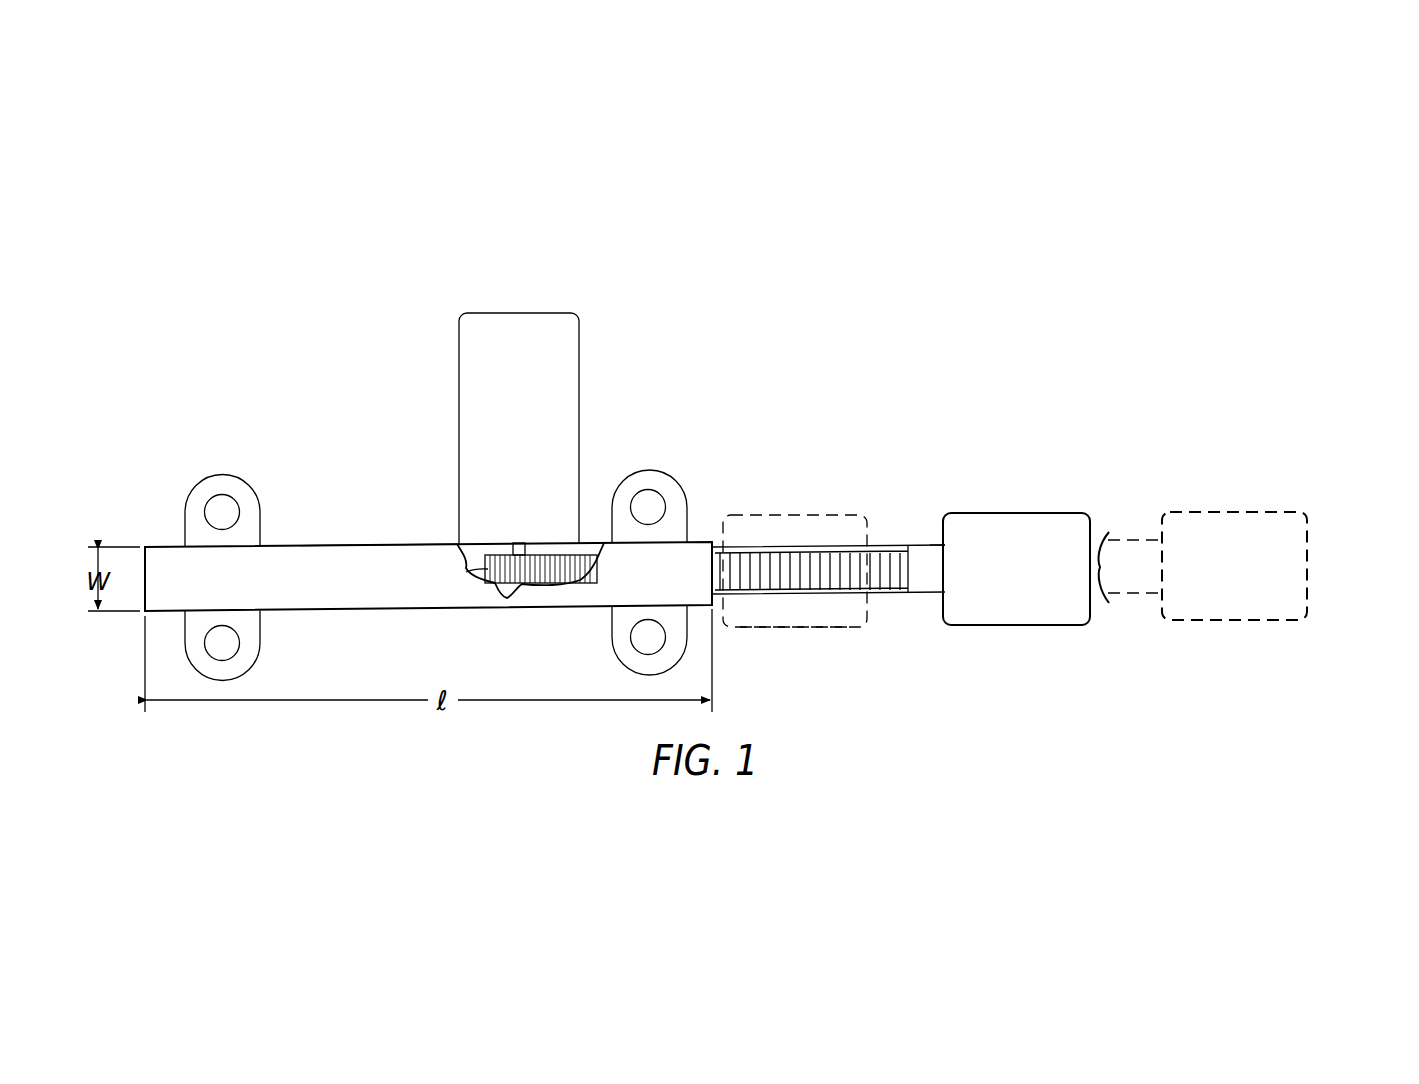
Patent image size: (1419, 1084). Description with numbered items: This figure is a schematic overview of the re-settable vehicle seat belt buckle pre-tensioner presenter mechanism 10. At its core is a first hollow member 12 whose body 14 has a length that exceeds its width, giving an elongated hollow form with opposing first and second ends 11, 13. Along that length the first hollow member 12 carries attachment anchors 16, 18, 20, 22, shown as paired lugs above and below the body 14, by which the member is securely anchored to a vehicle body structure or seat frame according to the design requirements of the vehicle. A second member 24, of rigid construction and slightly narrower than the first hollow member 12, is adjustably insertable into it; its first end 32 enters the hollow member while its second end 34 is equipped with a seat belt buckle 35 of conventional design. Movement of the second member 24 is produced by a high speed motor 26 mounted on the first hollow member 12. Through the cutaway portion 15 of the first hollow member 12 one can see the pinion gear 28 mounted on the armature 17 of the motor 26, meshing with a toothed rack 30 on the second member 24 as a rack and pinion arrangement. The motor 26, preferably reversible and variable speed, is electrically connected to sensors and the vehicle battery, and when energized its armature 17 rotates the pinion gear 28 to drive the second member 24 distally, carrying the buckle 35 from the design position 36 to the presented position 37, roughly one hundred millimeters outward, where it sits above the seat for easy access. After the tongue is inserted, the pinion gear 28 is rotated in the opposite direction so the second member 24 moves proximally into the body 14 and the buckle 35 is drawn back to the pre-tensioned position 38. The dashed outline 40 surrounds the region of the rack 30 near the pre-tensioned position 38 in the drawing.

The re-settable vehicle seat belt buckle pre-tensioner presenter mechanism 10 is at (1352, 392).
The first end 11 is at (713, 542).
The first hollow member 12 is at (318, 538).
The second end 13 is at (145, 543).
The body 14 is at (402, 558).
The cutaway portion 15 is at (462, 543).
The attachment anchor 16 is at (243, 661).
The armature 17 is at (516, 560).
The attachment anchor 18 is at (618, 645).
The attachment anchor 20 is at (220, 483).
The attachment anchor 22 is at (647, 477).
The second member 24 is at (927, 557).
The high speed motor 26 is at (517, 312).
The pinion gear 28 is at (523, 558).
The toothed rack 30 is at (810, 557).
The first end 32 is at (485, 569).
The second end 34 is at (945, 567).
The seat belt buckle 35 is at (1006, 582).
The design position 36 is at (1067, 512).
The presented position 37 is at (1223, 512).
The pre-tensioned position 38 is at (787, 617).
The sensor housing 40 is at (800, 512).